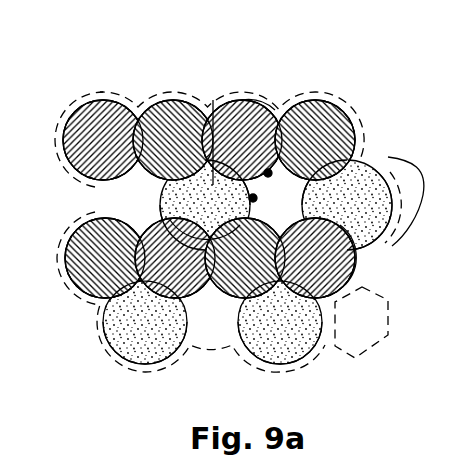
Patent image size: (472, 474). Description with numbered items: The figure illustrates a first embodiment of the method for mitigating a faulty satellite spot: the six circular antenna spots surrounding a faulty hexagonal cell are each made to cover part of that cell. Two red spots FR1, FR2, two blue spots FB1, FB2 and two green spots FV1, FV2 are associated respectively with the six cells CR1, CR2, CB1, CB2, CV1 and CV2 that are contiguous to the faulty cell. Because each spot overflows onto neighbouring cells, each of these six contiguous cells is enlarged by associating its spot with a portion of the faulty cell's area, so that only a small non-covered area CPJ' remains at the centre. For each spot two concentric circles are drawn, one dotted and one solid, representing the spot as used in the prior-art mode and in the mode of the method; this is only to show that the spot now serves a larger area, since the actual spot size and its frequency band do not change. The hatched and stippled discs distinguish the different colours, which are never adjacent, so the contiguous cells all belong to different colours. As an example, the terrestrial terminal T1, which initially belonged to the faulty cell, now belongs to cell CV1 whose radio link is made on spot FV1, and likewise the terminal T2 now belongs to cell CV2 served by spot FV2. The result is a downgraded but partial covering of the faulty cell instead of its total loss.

The green spot FV1 is at (173, 105).
The terrestrial terminal T1 is at (213, 100).
The terrestrial terminal T2 is at (268, 173).
The red spot FR2 is at (240, 89).
The red cell CR2 is at (268, 98).
The non-covered area CPJ' is at (302, 106).
The blue cell CB2 is at (340, 103).
The blue spot FB2 is at (365, 125).
The green cell CV2 is at (360, 157).
The green spot FV2 is at (394, 213).
The red spot FR1 is at (366, 254).
The red cell CR1 is at (354, 266).
The green cell CV1 is at (108, 213).
The blue spot FB1 is at (208, 320).
The blue cell CB1 is at (313, 262).